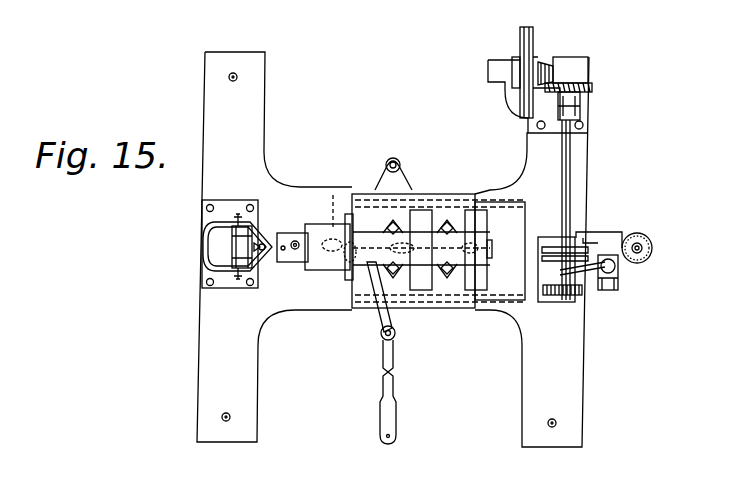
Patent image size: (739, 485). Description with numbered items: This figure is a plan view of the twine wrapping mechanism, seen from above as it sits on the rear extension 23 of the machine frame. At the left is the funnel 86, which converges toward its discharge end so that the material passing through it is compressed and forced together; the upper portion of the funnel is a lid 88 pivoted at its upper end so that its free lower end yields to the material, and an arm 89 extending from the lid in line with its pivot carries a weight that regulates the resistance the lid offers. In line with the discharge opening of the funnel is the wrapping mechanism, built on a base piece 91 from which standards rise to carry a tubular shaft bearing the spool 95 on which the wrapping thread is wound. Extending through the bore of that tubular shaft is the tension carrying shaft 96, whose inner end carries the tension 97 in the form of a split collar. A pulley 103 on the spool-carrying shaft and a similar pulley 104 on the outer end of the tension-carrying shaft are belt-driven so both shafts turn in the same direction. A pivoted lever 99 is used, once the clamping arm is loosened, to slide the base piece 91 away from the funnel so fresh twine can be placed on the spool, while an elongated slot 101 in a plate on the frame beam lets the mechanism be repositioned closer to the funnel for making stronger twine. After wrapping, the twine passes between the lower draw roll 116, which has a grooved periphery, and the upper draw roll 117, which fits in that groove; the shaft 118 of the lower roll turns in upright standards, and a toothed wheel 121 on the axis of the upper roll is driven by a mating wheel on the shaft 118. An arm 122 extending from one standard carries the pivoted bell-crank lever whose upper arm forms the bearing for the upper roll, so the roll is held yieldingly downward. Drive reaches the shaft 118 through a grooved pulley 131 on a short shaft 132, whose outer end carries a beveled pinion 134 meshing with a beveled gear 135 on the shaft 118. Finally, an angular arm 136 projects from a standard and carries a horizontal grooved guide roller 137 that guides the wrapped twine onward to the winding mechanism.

The rear extension 23 is at (248, 372).
The funnel 86 is at (222, 250).
The lid 88 is at (250, 226).
The arm 89 is at (263, 266).
The base piece 91 is at (460, 312).
The spool 95 is at (341, 262).
The tension carrying shaft 96 is at (492, 252).
The tension 97 is at (297, 258).
The pivoted lever 99 is at (394, 384).
The elongated slot 101 is at (333, 195).
The pulley 103 is at (420, 212).
The pulley 104 is at (478, 212).
The lower draw roll 116 is at (548, 245).
The upper draw roll 117 is at (542, 302).
The shaft 118 is at (568, 172).
The toothed wheel 121 is at (584, 296).
The arm 122 is at (598, 282).
The grooved pulley 131 is at (526, 27).
The short shaft 132 is at (503, 86).
The beveled pinion 134 is at (545, 62).
The beveled gear 135 is at (592, 90).
The angular arm 136 is at (613, 232).
The guide roller 137 is at (653, 244).